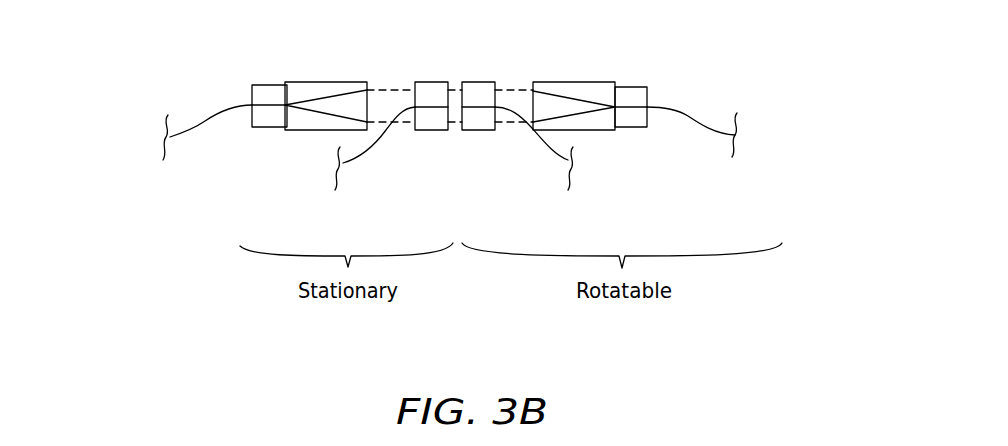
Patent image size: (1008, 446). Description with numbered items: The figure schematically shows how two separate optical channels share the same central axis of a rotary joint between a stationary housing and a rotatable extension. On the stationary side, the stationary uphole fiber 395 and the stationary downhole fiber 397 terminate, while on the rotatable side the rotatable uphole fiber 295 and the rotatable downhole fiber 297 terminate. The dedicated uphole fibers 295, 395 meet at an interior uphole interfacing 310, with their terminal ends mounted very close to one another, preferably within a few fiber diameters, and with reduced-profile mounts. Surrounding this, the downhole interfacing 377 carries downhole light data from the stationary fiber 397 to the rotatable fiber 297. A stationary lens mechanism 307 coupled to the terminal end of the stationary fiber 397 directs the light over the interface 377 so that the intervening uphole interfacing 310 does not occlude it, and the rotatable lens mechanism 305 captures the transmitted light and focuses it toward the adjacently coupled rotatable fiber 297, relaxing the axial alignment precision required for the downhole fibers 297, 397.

The downhole interfacing 377 is at (383, 88).
The rotatable lens mechanism 305 is at (588, 90).
The stationary lens mechanism 307 is at (302, 131).
The uphole interfacing 310 is at (451, 136).
The stationary uphole fiber 395 is at (357, 163).
The rotatable uphole fiber 295 is at (554, 162).
The stationary downhole fiber 397 is at (183, 137).
The rotatable downhole fiber 297 is at (706, 134).